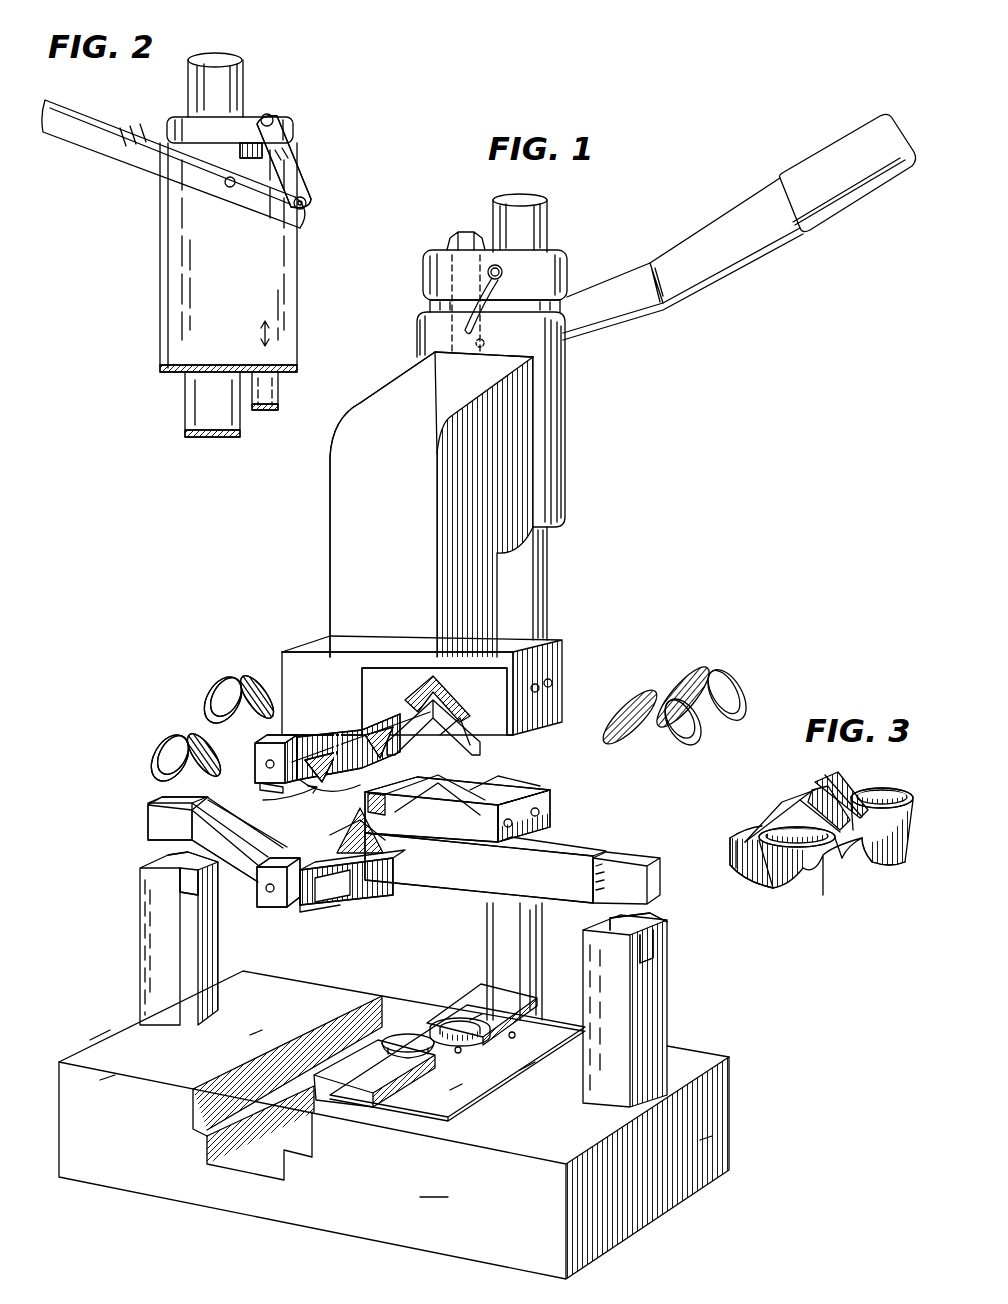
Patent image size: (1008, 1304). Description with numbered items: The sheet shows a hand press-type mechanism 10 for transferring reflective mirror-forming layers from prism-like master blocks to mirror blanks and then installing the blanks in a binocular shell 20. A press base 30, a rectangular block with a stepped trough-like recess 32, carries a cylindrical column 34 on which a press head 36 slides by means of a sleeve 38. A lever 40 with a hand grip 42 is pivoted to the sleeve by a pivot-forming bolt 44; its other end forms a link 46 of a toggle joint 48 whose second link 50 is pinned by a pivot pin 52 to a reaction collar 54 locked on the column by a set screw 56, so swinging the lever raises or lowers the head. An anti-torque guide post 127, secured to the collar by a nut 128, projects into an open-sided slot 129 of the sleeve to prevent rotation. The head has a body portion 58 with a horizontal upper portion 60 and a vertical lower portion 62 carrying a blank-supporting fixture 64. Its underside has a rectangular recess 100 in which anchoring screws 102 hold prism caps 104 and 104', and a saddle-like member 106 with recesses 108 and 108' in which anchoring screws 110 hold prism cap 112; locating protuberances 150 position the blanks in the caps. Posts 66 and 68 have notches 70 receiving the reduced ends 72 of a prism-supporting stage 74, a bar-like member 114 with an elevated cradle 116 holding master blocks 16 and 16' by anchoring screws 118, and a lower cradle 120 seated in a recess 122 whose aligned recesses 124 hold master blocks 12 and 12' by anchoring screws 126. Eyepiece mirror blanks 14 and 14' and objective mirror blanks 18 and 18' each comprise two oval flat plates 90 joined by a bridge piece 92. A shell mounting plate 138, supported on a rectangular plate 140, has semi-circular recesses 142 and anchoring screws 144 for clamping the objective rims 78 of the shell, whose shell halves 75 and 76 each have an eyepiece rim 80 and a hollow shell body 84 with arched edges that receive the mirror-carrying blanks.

In FIG. 1, the press-type mechanism 10 is at (636, 551).
In FIG. 1, the prism-like master block 12 is at (325, 890).
In FIG. 1, the prism-like master block 12' is at (361, 842).
In FIG. 1, the mirror blank 14 is at (162, 757).
In FIG. 1, the mirror blank 14' is at (220, 692).
In FIG. 1, the prism-like master block 16 is at (457, 817).
In FIG. 1, the prism-like master block 16' is at (522, 774).
In FIG. 1, the mirror blank 18 is at (652, 702).
In FIG. 1, the mirror blank 18' is at (701, 685).
In FIG. 3, the binocular shell 20 is at (785, 779).
In FIG. 1, the press base 30 is at (394, 1125).
In FIG. 1, the stepped trough-like recess 32 is at (256, 1166).
In FIG. 2, the cylindrical column 34 is at (190, 80).
In FIG. 1, the cylindrical column 34 is at (545, 216).
In FIG. 1, the press head 36 is at (300, 622).
In FIG. 1, the sleeve 38 is at (566, 443).
In FIG. 2, the lever 40 is at (120, 152).
In FIG. 1, the lever 40 is at (705, 287).
In FIG. 1, the hand grip 42 is at (818, 216).
In FIG. 2, the pivot-forming bolt 44 is at (228, 187).
In FIG. 2, the link 46 is at (306, 210).
In FIG. 2, the toggle joint 48 is at (330, 182).
In FIG. 2, the link 50 is at (296, 165).
In FIG. 2, the pivot pin 52 is at (275, 118).
In FIG. 2, the reaction collar 54 is at (180, 118).
In FIG. 1, the reaction collar 54 is at (569, 270).
In FIG. 1, the set screw 56 is at (487, 272).
In FIG. 1, the body portion 58 is at (322, 470).
In FIG. 1, the horizontal upper portion 60 is at (398, 386).
In FIG. 1, the vertical lower portion 62 is at (340, 516).
In FIG. 1, the blank-supporting fixture 64 is at (571, 637).
In FIG. 1, the post 66 is at (140, 926).
In FIG. 1, the post 68 is at (668, 1008).
In FIG. 1, the notch 70 is at (168, 860).
In FIG. 1, the reduced end 72 is at (643, 866).
In FIG. 1, the prism-supporting stage 74 is at (594, 827).
In FIG. 3, the shell half 75 is at (822, 892).
In FIG. 3, the shell half 76 is at (868, 870).
In FIG. 3, the objective rim 78 is at (755, 872).
In FIG. 3, the eyepiece rim 80 is at (785, 830).
In FIG. 3, the hollow shell body 84 is at (752, 838).
In FIG. 1, the flat plate 90 is at (225, 712).
In FIG. 1, the bridge piece 92 is at (240, 676).
In FIG. 1, the rectangular recess 100 is at (378, 669).
In FIG. 1, the anchoring screw 102 is at (553, 683).
In FIG. 1, the prism cap 104 is at (433, 734).
In FIG. 1, the prism cap 104' is at (451, 728).
In FIG. 1, the saddle-like member 106 is at (282, 745).
In FIG. 1, the rectangular recess 108 is at (361, 747).
In FIG. 1, the rectangular recess 108' is at (384, 723).
In FIG. 1, the anchoring screw 110 is at (258, 775).
In FIG. 1, the prism cap 112 is at (292, 790).
In FIG. 1, the bar-like member 114 is at (425, 877).
In FIG. 1, the cradle 116 is at (468, 840).
In FIG. 1, the anchoring screw 118 is at (513, 823).
In FIG. 1, the cradle 120 is at (280, 908).
In FIG. 1, the recess 122 is at (352, 877).
In FIG. 1, the recess 124 is at (310, 908).
In FIG. 1, the anchoring screw 126 is at (265, 890).
In FIG. 2, the anti-torque guide post 127 is at (280, 394).
In FIG. 1, the anti-torque guide post 127 is at (450, 298).
In FIG. 1, the nut 128 is at (458, 238).
In FIG. 2, the open-sided slot 129 is at (290, 373).
In FIG. 1, the open-sided slot 129 is at (486, 343).
In FIG. 1, the shell mounting plate 138 is at (352, 1100).
In FIG. 1, the rectangular plate 140 is at (498, 1090).
In FIG. 1, the semi-circular recess 142 is at (415, 1040).
In FIG. 1, the anchoring screw 144 is at (515, 1037).
In FIG. 1, the locating protuberance 150 is at (428, 688).